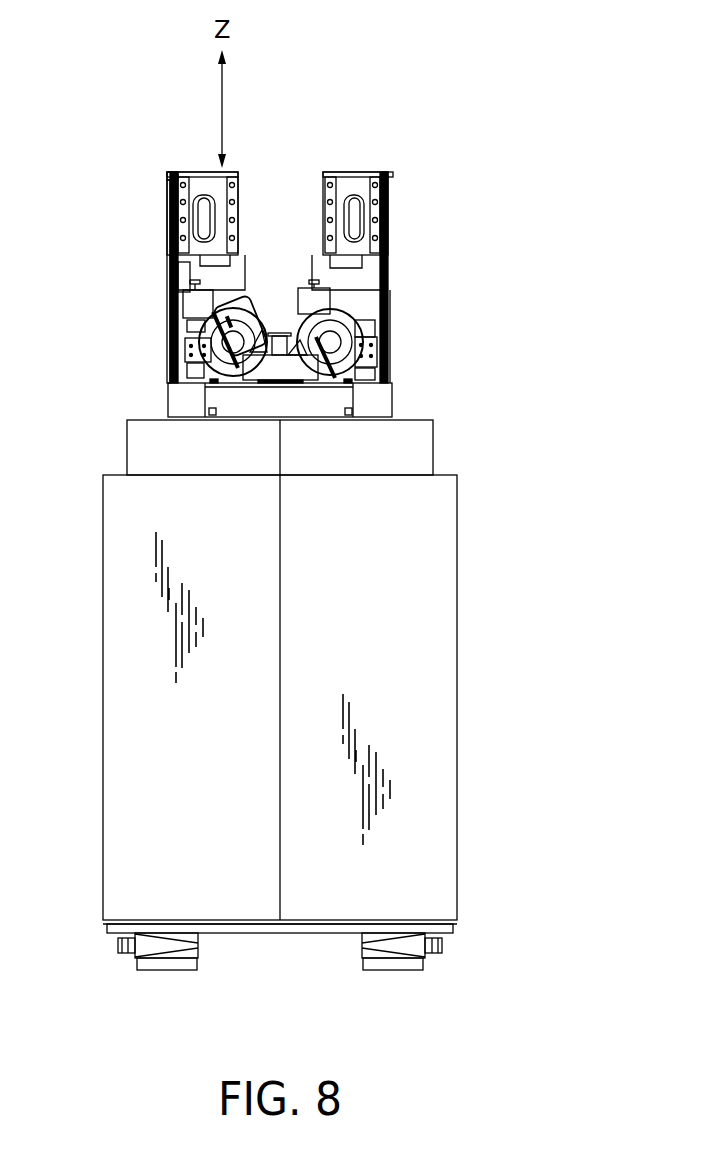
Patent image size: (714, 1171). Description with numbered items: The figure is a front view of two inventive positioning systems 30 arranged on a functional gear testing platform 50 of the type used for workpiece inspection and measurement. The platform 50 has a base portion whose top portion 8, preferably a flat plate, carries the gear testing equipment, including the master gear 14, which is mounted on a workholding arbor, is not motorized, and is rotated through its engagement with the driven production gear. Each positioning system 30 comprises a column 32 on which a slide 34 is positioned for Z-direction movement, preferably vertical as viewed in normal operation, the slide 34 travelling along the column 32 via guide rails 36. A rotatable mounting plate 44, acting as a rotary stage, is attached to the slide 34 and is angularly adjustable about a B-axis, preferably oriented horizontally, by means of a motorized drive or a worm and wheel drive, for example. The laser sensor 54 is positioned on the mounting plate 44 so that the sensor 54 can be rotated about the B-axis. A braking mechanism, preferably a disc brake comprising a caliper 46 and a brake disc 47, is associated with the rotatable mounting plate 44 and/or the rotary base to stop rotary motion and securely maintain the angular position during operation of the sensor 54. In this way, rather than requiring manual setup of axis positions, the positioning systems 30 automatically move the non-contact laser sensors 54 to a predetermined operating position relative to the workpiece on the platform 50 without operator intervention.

The top portion 8 is at (148, 443).
The master gear 14 is at (313, 373).
The positioning system 30 is at (196, 158).
The column 32 is at (170, 180).
The slide 34 is at (170, 270).
The guide rails 36 is at (170, 215).
The rotatable mounting plate 44 is at (348, 349).
The caliper 46 is at (187, 355).
The brake disc 47 is at (345, 322).
The functional testing platform 50 is at (450, 418).
The laser sensor 54 is at (250, 310).